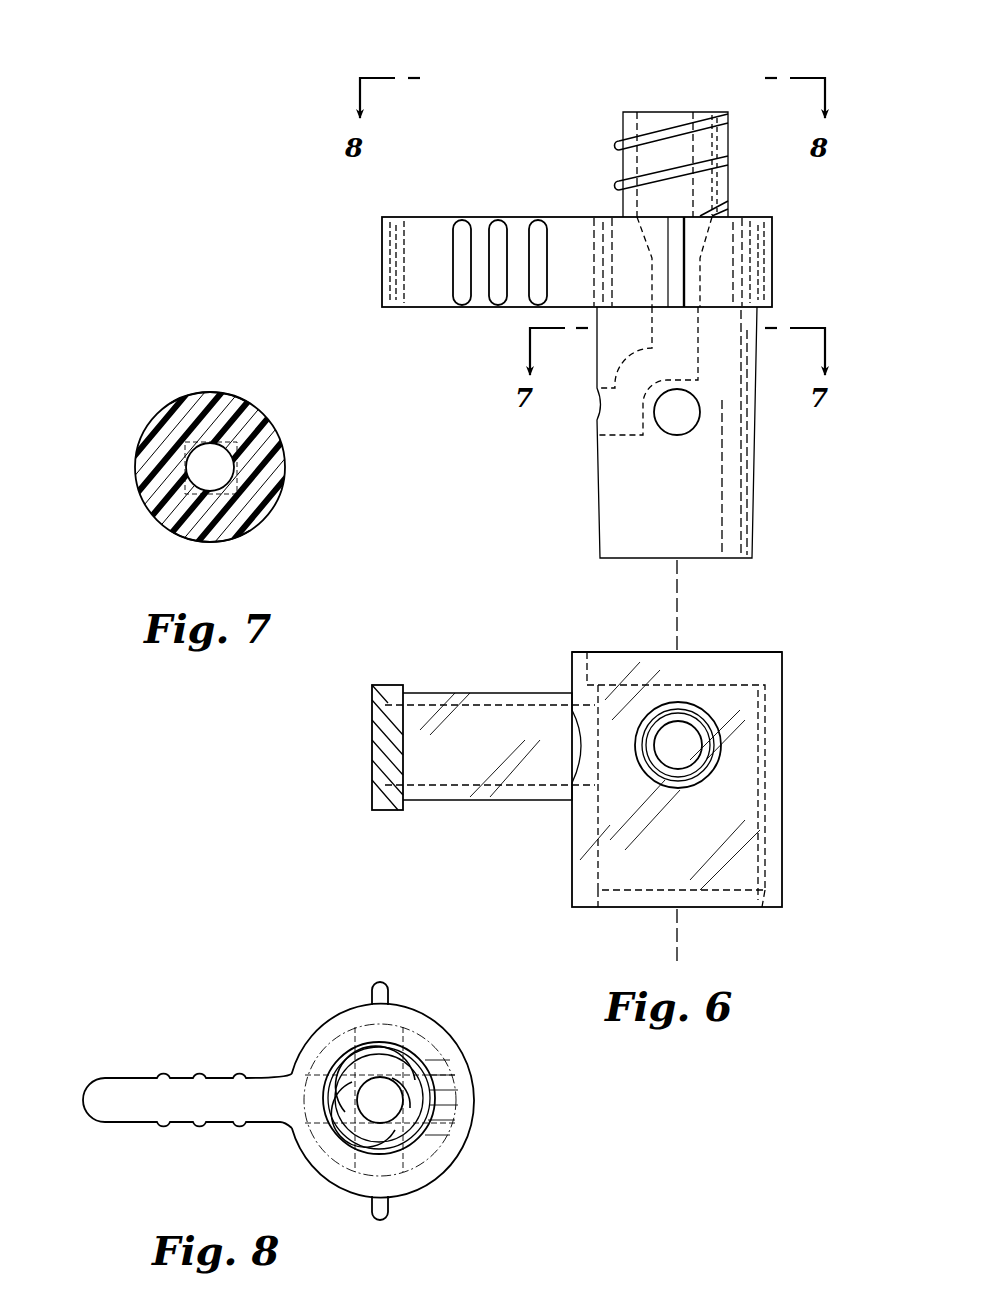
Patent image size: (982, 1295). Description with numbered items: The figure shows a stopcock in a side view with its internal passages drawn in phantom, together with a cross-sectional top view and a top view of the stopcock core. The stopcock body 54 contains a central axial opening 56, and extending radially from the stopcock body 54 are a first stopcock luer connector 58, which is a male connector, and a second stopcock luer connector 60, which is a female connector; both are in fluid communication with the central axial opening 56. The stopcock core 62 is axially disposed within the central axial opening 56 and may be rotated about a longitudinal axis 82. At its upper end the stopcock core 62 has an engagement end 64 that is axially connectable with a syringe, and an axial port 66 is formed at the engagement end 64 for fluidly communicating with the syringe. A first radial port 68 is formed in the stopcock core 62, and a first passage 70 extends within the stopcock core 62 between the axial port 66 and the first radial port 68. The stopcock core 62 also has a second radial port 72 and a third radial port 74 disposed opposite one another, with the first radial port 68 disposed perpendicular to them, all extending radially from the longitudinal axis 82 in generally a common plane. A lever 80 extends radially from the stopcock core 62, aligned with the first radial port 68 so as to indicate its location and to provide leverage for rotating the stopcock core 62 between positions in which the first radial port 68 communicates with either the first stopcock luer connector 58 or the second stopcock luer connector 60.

In FIG. 6, the stopcock body 54 is at (802, 668).
In FIG. 6, the central axial opening 56 is at (745, 650).
In FIG. 6, the first stopcock luer connector 58 is at (430, 690).
In FIG. 6, the second stopcock luer connector 60 is at (722, 745).
In FIG. 6, the stopcock core 62 is at (786, 210).
In FIG. 8, the stopcock core 62 is at (300, 1005).
In FIG. 6, the engagement end 64 is at (625, 112).
In FIG. 8, the engagement end 64 is at (425, 1103).
In FIG. 6, the axial port 66 is at (697, 104).
In FIG. 8, the axial port 66 is at (382, 1098).
In FIG. 6, the first radial port 68 is at (590, 415).
In FIG. 7, the first radial port 68 is at (133, 467).
In FIG. 6, the first passage 70 is at (668, 352).
In FIG. 7, the first passage 70 is at (207, 468).
In FIG. 6, the second radial port 72 is at (678, 412).
In FIG. 7, the second radial port 72 is at (210, 547).
In FIG. 7, the third radial port 74 is at (210, 390).
In FIG. 8, the lever 80 is at (92, 1098).
In FIG. 6, the longitudinal axis 82 is at (676, 602).